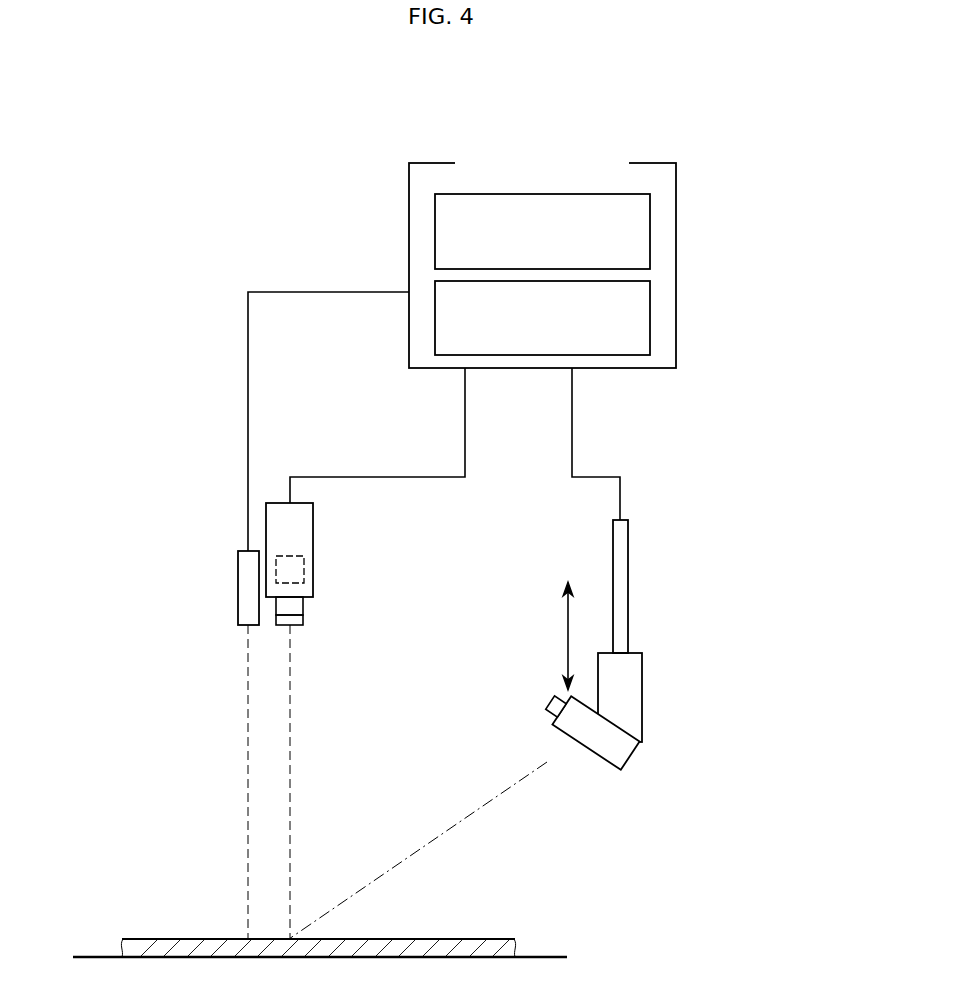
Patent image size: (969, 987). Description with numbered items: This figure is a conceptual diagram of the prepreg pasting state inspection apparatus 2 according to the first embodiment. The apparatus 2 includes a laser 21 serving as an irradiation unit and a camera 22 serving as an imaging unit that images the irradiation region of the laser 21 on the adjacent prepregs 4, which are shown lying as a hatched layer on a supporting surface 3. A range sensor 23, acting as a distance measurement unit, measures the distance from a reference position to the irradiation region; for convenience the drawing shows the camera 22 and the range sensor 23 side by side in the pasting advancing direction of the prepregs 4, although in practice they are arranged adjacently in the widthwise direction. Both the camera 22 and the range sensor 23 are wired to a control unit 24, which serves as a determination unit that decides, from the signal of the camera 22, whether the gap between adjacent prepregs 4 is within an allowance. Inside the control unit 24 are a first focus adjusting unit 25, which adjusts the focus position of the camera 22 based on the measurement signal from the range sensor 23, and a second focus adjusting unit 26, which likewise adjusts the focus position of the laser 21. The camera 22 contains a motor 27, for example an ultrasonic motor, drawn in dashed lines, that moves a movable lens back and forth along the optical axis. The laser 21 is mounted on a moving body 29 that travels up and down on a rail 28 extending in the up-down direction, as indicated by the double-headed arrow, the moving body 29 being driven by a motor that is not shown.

The prepreg pasting state inspection apparatus 2 is at (782, 251).
The stage 3 is at (544, 957).
The prepreg 4 is at (422, 938).
The laser 21 is at (556, 728).
The camera 22 is at (314, 533).
The range sensor 23 is at (244, 587).
The control unit 24 is at (650, 163).
The first focus adjusting unit 25 is at (651, 232).
The second focus adjusting unit 26 is at (651, 315).
The motor 27 is at (314, 567).
The rail 28 is at (624, 585).
The moving body 29 is at (632, 678).